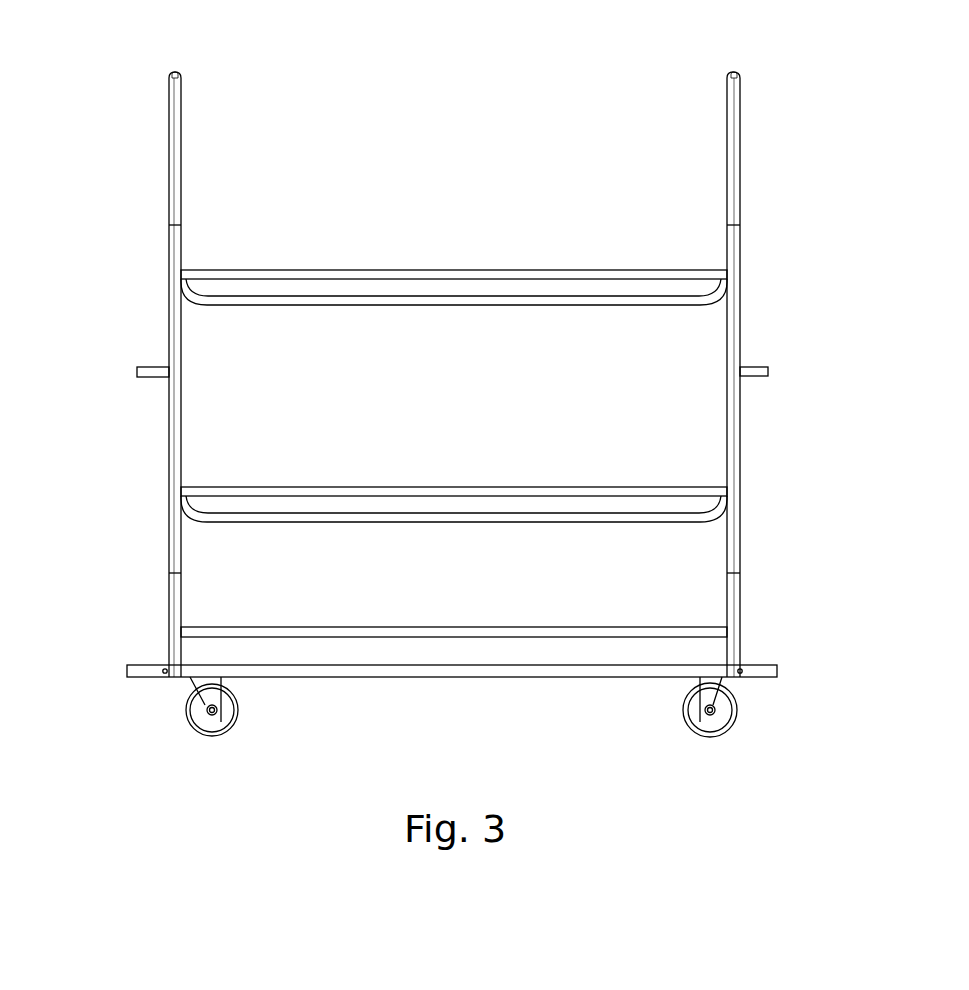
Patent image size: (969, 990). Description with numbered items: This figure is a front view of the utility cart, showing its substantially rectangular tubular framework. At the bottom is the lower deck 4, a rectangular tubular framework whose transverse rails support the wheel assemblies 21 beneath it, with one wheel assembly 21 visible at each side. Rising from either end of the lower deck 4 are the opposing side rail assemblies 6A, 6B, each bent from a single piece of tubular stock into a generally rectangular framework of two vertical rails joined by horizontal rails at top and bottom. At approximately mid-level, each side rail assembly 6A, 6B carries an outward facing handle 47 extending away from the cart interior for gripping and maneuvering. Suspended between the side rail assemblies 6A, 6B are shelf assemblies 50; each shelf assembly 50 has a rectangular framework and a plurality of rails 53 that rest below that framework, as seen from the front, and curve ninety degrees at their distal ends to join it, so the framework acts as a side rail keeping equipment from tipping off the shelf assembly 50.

The side rail assembly 6A is at (165, 173).
The side rail assembly 6B is at (737, 158).
The shelf assembly 50 is at (310, 270).
The rail 53 is at (510, 305).
The lower deck 4 is at (398, 677).
The handle 47 is at (138, 372).
The wheel assembly 21 is at (192, 725).